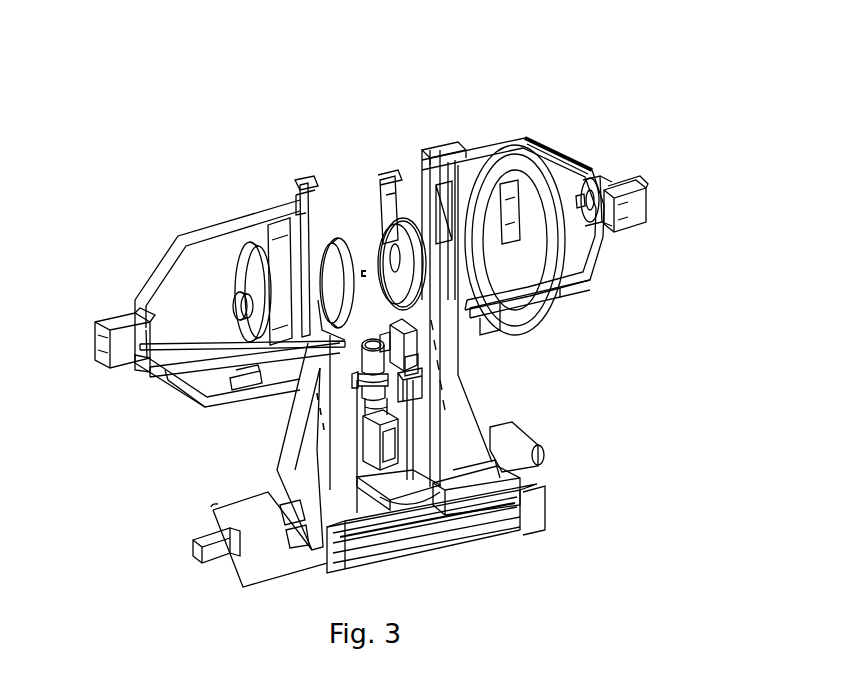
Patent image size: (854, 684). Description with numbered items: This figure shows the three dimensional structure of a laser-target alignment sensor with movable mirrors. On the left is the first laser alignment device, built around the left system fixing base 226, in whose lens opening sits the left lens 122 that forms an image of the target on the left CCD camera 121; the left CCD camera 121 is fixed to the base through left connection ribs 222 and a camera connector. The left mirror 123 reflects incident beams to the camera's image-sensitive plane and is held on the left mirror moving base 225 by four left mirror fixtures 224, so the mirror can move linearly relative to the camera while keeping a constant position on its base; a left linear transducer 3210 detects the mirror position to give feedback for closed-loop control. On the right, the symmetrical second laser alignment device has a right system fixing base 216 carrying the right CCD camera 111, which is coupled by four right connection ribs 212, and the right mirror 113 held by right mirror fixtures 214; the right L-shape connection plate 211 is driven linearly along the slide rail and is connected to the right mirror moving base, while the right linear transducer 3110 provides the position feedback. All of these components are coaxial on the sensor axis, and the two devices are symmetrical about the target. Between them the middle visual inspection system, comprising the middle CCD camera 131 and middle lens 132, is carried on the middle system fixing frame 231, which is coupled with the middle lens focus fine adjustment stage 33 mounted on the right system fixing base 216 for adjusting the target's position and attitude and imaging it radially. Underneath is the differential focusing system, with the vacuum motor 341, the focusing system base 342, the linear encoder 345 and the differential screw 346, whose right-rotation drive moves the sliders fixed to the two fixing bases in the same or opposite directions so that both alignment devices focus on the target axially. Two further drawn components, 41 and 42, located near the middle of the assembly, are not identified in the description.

The right CCD camera 111 is at (627, 207).
The right mirror 113 is at (507, 267).
The left CCD camera 121 is at (120, 333).
The left lens 122 is at (240, 308).
The left mirror 123 is at (243, 253).
The middle CCD camera 131 is at (390, 445).
The middle lens 132 is at (374, 330).
The right L-shape connection plate 211 is at (488, 253).
The right connection ribs 212 is at (592, 169).
The right mirror fixtures 214 is at (492, 220).
The right system fixing base 216 is at (441, 352).
The left connection ribs 222 is at (167, 240).
The left mirror fixtures 224 is at (275, 286).
The left mirror moving base 225 is at (295, 277).
The left system fixing base 226 is at (333, 465).
The middle system fixing frame 231 is at (398, 363).
The middle lens focus fine adjustment stage 33 is at (421, 386).
The right linear transducer 3110 is at (528, 307).
The left linear transducer 3210 is at (217, 387).
The vacuum motor 341 is at (207, 547).
The focusing system base 342 is at (250, 516).
The linear encoder 345 is at (410, 537).
The differential screw 346 is at (370, 493).
The first disc 41 is at (415, 250).
The second disc 42 is at (337, 258).